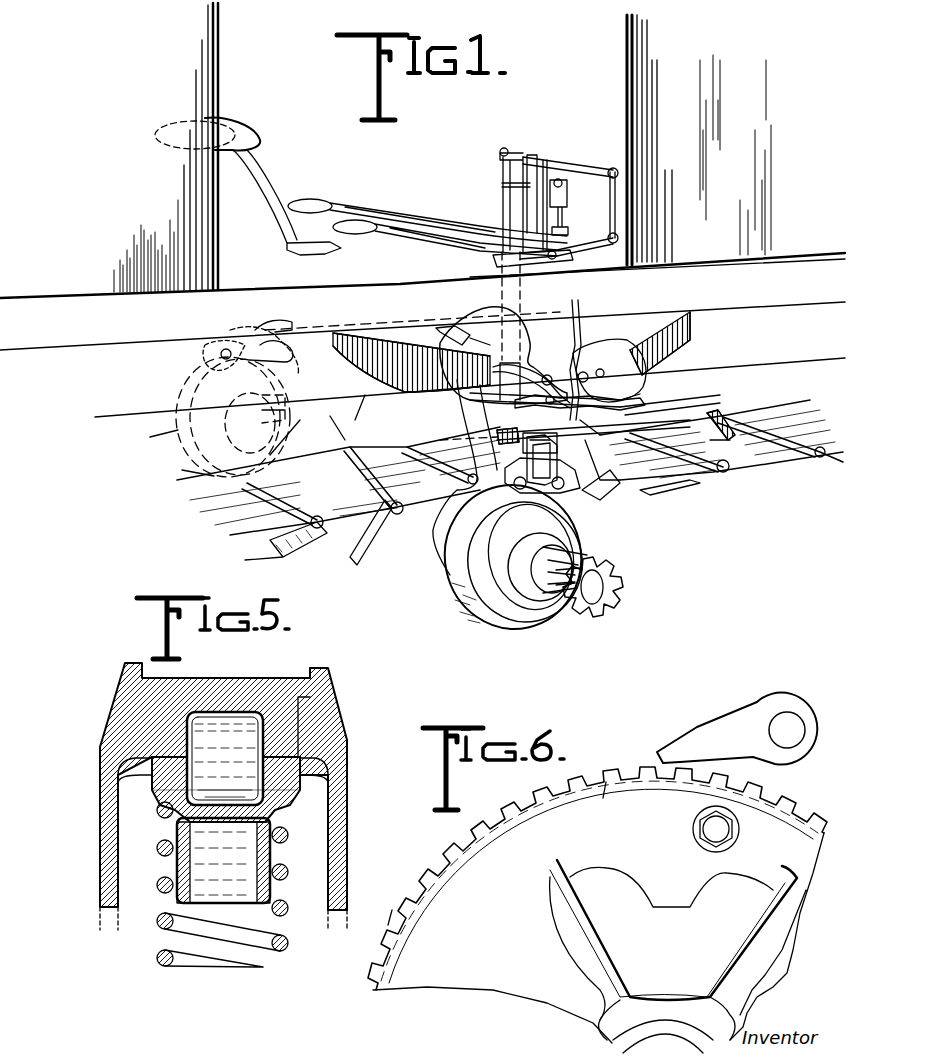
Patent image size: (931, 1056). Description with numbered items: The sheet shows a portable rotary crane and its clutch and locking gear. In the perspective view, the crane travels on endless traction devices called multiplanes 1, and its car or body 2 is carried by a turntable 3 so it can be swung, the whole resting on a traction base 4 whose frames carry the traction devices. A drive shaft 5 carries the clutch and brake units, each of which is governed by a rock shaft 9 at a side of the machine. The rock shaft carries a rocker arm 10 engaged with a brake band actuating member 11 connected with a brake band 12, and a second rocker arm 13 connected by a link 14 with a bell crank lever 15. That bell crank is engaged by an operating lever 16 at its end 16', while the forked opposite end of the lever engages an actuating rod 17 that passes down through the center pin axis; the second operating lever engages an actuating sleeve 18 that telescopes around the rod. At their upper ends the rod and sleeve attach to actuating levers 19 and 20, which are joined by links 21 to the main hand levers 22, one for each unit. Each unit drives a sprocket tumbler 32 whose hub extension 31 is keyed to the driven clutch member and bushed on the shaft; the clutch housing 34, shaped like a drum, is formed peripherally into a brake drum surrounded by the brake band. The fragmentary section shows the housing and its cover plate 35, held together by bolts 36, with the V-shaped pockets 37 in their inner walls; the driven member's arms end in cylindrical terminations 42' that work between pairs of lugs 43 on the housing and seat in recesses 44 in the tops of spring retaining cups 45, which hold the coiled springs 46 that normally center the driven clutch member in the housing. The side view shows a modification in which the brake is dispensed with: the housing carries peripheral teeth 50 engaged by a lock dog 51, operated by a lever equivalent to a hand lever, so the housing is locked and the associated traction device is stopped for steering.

In FIG. 1, the multiplanes 1 is at (758, 490).
In FIG. 1, the car or body 2 is at (650, 295).
In FIG. 1, the turntable 3 is at (660, 360).
In FIG. 1, the traction base 4 is at (356, 419).
In FIG. 1, the drive shaft 5 is at (283, 440).
In FIG. 1, the rock shaft 9 is at (360, 333).
In FIG. 1, the rocker arm 10 is at (265, 330).
In FIG. 1, the brake band actuating member 11 is at (235, 345).
In FIG. 1, the brake band 12 is at (185, 425).
In FIG. 1, the rocker arm 13 is at (442, 330).
In FIG. 1, the link 14 is at (640, 408).
In FIG. 1, the bell crank lever 15 is at (690, 388).
In FIG. 1, the operating lever 16 is at (586, 352).
In FIG. 1, the end of operating lever 16' is at (694, 343).
In FIG. 1, the actuating rod 17 is at (470, 428).
In FIG. 1, the actuating sleeve or tube 18 is at (530, 340).
In FIG. 1, the actuating lever 19 is at (527, 165).
In FIG. 1, the actuating lever 20 is at (560, 172).
In FIG. 1, the links 21 is at (612, 210).
In FIG. 1, the main hand levers 22 is at (440, 220).
In FIG. 1, the hub extension 31 is at (555, 573).
In FIG. 1, the driving sprocket tumbler 32 is at (612, 585).
In FIG. 1, the clutch housing 34 is at (200, 392).
In FIG. 6, the cover plate 35 is at (633, 825).
In FIG. 6, the bolts 36 is at (740, 832).
In FIG. 5, the V-shaped pockets or recesses 37 is at (232, 743).
In FIG. 5, the cylindrical terminations 42' is at (167, 793).
In FIG. 5, the lugs 43 is at (150, 741).
In FIG. 5, the recesses 44 is at (262, 795).
In FIG. 5, the spring retaining cups 45 is at (217, 834).
In FIG. 5, the coiled springs 46 is at (262, 838).
In FIG. 6, the peripheral teeth 50 is at (606, 782).
In FIG. 6, the lock dog 51 is at (727, 712).